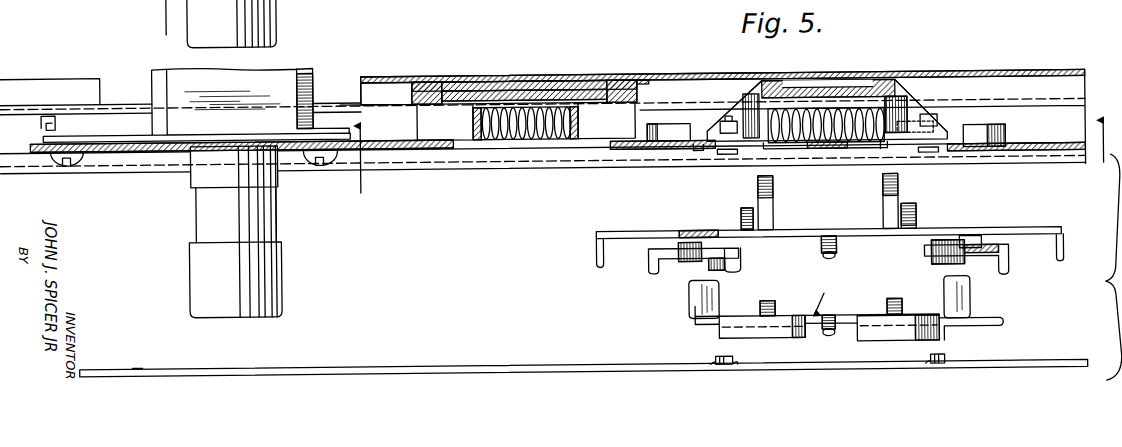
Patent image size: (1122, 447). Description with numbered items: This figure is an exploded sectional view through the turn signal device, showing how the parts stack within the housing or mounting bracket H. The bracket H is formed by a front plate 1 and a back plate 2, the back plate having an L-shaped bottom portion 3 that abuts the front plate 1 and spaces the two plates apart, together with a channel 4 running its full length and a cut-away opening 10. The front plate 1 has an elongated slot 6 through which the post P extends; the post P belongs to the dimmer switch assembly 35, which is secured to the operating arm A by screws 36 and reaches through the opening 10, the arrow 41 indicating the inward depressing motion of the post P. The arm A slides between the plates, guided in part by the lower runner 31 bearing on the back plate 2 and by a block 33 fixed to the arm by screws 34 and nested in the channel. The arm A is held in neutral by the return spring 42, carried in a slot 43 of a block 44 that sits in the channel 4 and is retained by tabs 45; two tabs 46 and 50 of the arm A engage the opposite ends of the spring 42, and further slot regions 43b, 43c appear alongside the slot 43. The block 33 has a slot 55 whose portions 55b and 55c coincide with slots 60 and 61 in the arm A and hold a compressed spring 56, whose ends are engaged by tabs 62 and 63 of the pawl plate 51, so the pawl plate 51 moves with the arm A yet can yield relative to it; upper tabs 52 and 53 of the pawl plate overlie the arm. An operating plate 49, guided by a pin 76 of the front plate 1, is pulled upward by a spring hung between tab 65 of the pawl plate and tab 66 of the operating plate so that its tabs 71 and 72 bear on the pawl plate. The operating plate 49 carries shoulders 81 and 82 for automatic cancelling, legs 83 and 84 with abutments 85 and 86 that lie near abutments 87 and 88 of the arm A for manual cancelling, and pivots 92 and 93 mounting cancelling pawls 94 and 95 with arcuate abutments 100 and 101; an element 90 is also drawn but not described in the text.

The arrow 41 is at (167, 12).
The lower runner 31 is at (46, 113).
The dimmer switch assembly 35 is at (178, 68).
The opening 10 is at (361, 97).
The screws 36 is at (64, 163).
The operating arm A is at (132, 151).
The L-shaped bottom portion 3 is at (739, 163).
The tabs 45 is at (411, 90).
The back plate 2 is at (472, 83).
The slot 43 is at (518, 104).
The block 44 is at (628, 83).
The block 43b is at (440, 128).
The tab 46 is at (476, 130).
The return spring 42 is at (524, 142).
The tab 50 is at (586, 142).
The block 43c is at (598, 130).
The abutment 87 is at (660, 127).
The housing or mounting bracket H is at (975, 76).
The channel 4 is at (997, 97).
The slot 55 is at (878, 85).
The slot portion 55b is at (742, 110).
The slot portion 55c is at (907, 120).
The spring 56 is at (832, 113).
The block 33 is at (900, 112).
The screws 34 is at (727, 112).
The abutment 88 is at (990, 131).
The pawl plate 51 is at (873, 241).
The tab 62 is at (757, 182).
The slot 60 is at (697, 156).
The upper tab 52 is at (740, 215).
The tab 63 is at (890, 200).
The slot 61 is at (880, 150).
The upper tab 53 is at (915, 212).
The tab 65 is at (820, 255).
The pivot 93 is at (690, 234).
The cancelling pawl 95 is at (680, 254).
The arcuate abutment 101 is at (733, 275).
The abutment 85 is at (700, 298).
The leg 83 is at (697, 324).
The shoulder 81 is at (722, 331).
The tab 71 is at (775, 290).
The operating plate 49 is at (813, 294).
The tab 66 is at (822, 340).
The tab 72 is at (890, 305).
The shoulder 82 is at (935, 340).
The abutment 86 is at (968, 296).
The leg 84 is at (955, 332).
The arcuate abutment 100 is at (925, 277).
The pivot 92 is at (968, 242).
The cancelling pawl 94 is at (985, 251).
The post P is at (272, 268).
The front plate 1 is at (475, 374).
The elongated slot 6 is at (135, 374).
The pin or stud 76 is at (715, 362).
The clip 90 is at (940, 358).